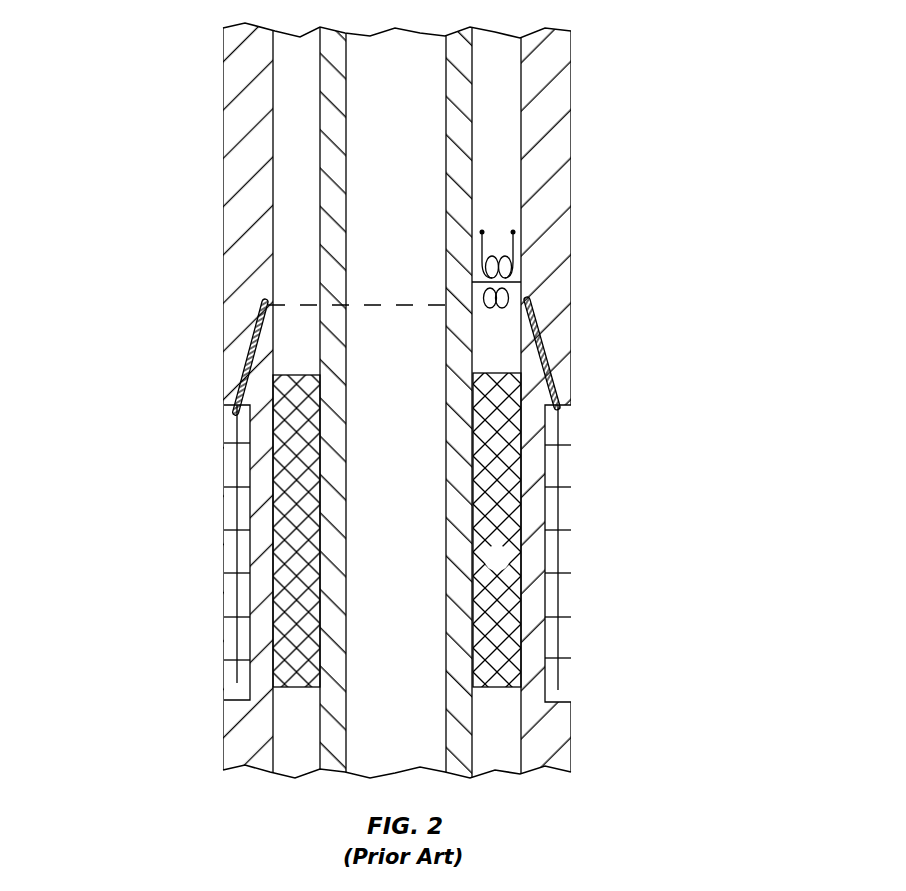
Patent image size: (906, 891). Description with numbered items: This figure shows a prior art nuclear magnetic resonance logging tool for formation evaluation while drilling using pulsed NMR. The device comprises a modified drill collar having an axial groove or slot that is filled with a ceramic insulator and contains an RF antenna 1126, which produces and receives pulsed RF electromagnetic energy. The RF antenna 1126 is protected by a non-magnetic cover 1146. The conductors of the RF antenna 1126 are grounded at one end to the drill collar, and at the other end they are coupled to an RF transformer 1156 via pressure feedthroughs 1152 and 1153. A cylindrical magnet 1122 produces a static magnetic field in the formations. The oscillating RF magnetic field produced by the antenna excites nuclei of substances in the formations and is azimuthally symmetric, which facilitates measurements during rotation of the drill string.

The cylindrical magnet 1122 is at (297, 658).
The RF antenna 1126 is at (224, 568).
The non-magnetic cover 1146 is at (224, 465).
The pressure feedthrough 1152 is at (550, 363).
The pressure feedthrough 1153 is at (250, 365).
The RF transformer 1156 is at (473, 317).